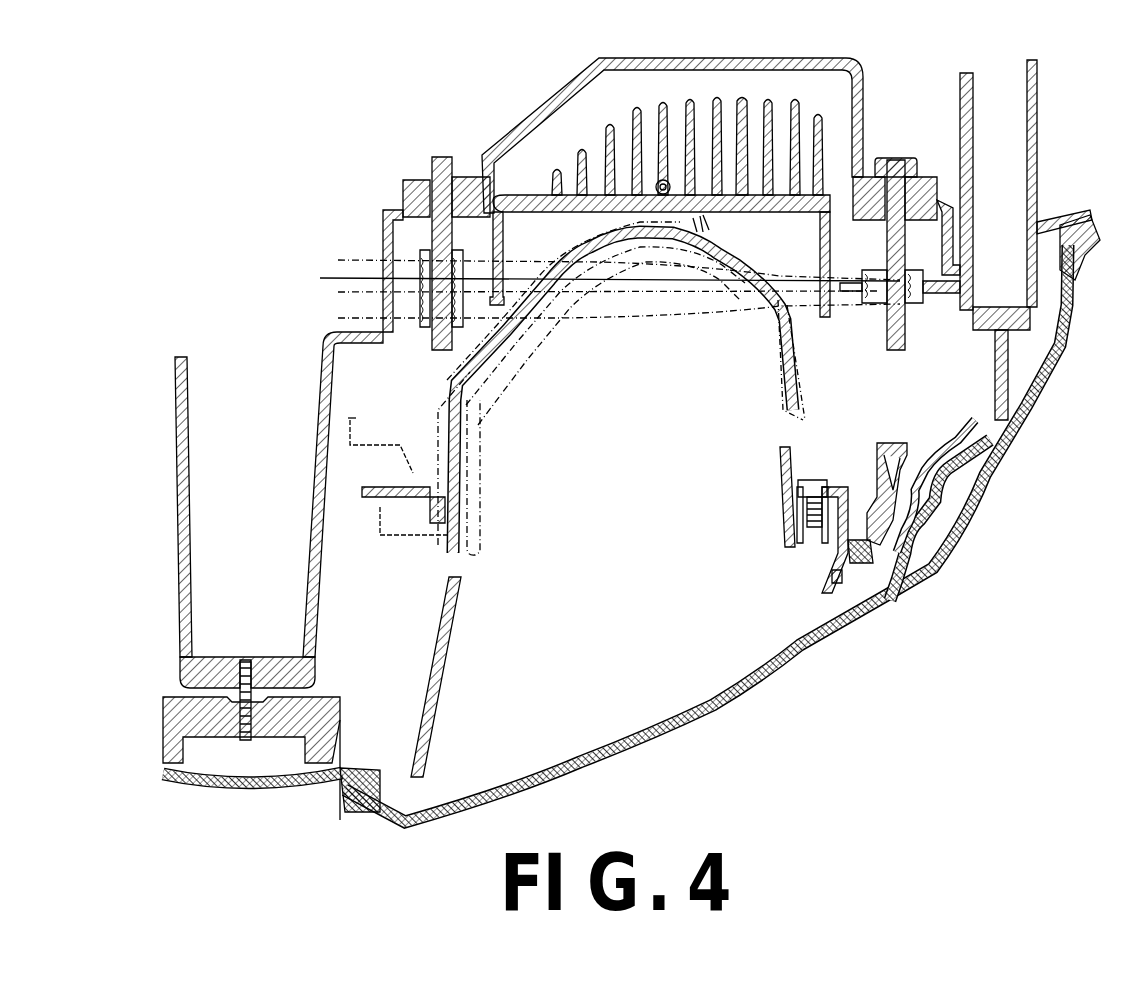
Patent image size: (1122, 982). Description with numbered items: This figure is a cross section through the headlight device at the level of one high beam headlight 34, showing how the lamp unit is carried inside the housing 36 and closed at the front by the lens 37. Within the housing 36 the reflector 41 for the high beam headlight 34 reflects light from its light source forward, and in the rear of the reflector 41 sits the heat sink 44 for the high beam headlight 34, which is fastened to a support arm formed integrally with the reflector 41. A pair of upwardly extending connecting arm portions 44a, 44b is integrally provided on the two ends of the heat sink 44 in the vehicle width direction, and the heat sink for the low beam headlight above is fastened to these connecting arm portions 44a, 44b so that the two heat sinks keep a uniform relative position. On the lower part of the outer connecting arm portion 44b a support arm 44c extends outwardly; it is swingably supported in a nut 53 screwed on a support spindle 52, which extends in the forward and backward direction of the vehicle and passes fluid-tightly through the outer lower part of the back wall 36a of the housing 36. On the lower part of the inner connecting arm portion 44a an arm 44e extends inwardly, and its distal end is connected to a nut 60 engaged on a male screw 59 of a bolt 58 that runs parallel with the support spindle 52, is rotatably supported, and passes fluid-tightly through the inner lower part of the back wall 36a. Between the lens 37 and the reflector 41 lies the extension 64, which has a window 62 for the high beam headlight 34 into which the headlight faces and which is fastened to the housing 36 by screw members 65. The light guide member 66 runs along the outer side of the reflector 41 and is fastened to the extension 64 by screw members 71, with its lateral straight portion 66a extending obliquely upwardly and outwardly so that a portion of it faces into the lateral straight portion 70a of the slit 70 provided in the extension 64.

The high beam headlight 34 is at (793, 663).
The housing 36 is at (317, 410).
The back wall 36a is at (785, 59).
The lens 37 is at (663, 732).
The reflector 41 is at (490, 380).
The heat sink 44 is at (822, 152).
The connecting arm portion 44a is at (505, 258).
The connecting arm portion 44b is at (817, 270).
The support arm 44c is at (843, 293).
The arm 44e is at (470, 377).
The support spindle 52 is at (897, 332).
The nut 53 is at (920, 235).
The bolt 58 is at (430, 232).
The male screw 59 is at (420, 315).
The nut 60 is at (320, 278).
The window 62 is at (797, 510).
The extension 64 is at (390, 747).
The screw member 65 is at (317, 707).
The light guide member 66 is at (877, 460).
The lateral straight portion 66a is at (847, 577).
The slit 70 is at (890, 600).
The lateral straight portion 70a is at (873, 557).
The screw member 71 is at (813, 473).